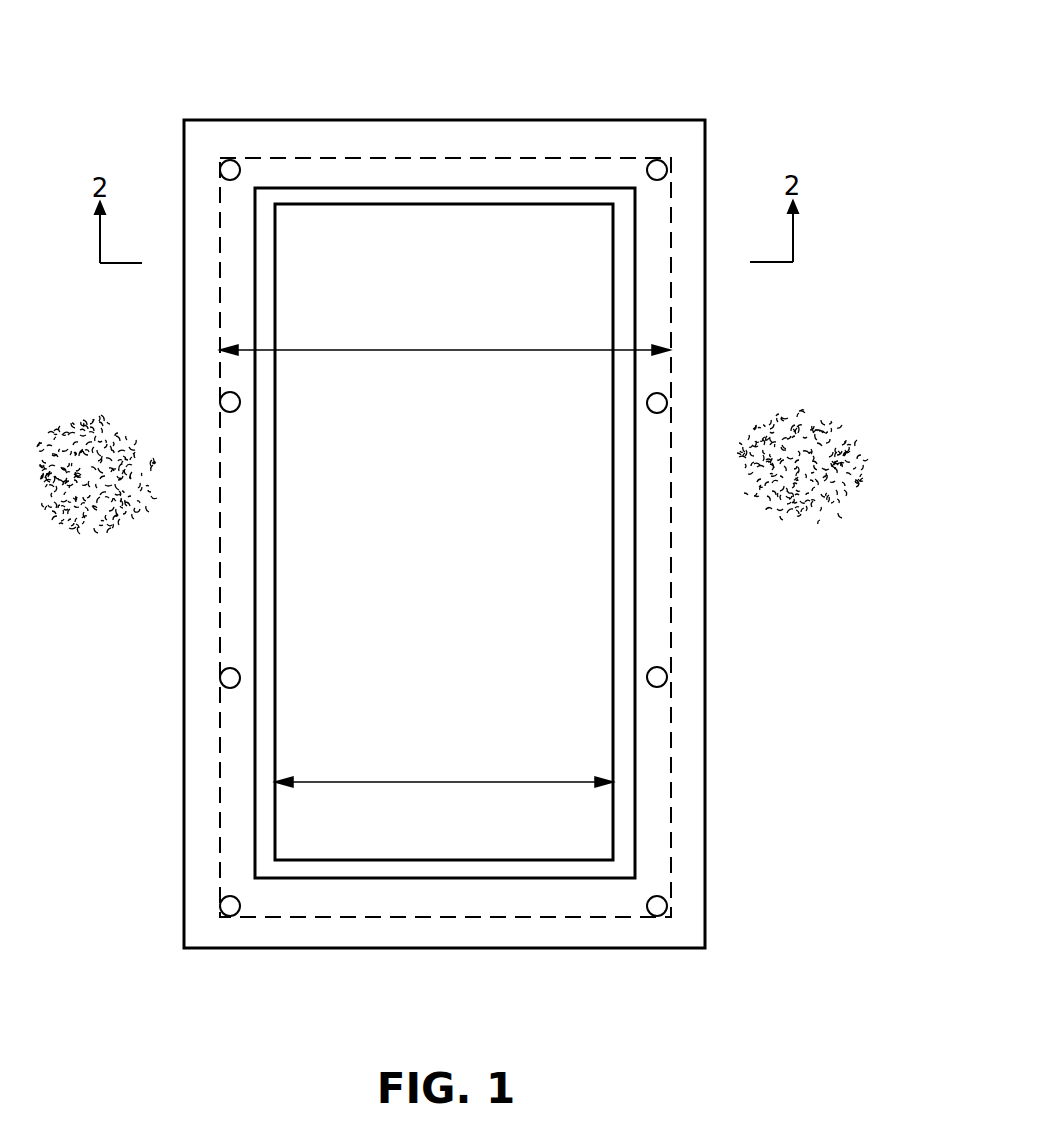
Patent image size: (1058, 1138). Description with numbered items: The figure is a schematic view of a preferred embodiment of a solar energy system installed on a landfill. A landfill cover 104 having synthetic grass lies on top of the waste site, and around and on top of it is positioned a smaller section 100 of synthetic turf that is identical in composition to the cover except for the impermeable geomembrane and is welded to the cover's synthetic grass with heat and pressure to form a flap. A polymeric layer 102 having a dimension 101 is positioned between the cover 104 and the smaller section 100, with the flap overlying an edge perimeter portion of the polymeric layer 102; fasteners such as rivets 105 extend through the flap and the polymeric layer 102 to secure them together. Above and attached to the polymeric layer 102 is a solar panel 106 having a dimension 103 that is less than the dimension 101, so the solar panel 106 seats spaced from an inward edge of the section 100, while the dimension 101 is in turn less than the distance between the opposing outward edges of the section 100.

The smaller section of synthetic turf 100 is at (704, 382).
The dimension of polymeric layer 101 is at (445, 331).
The polymeric layer 102 is at (532, 200).
The dimension of solar panel 103 is at (444, 763).
The landfill cover 104 is at (795, 475).
The rivets 105 is at (657, 677).
The solar panel 106 is at (342, 832).